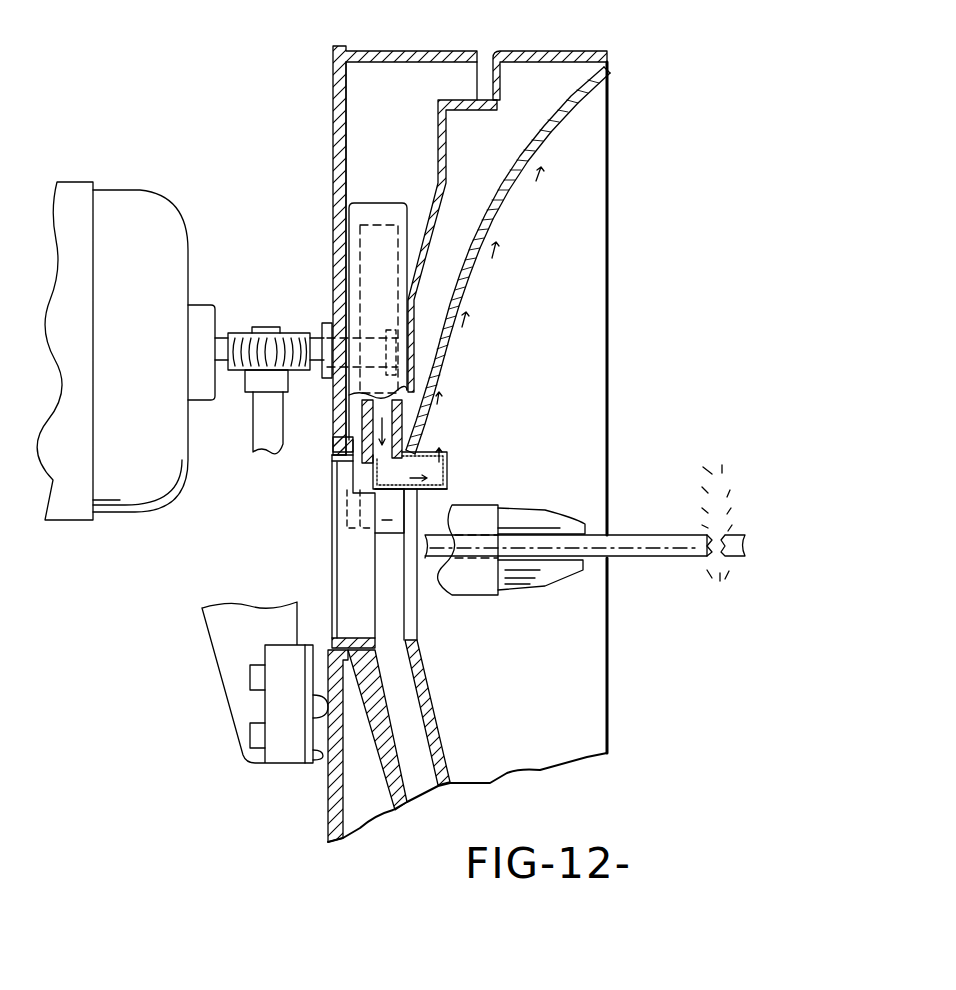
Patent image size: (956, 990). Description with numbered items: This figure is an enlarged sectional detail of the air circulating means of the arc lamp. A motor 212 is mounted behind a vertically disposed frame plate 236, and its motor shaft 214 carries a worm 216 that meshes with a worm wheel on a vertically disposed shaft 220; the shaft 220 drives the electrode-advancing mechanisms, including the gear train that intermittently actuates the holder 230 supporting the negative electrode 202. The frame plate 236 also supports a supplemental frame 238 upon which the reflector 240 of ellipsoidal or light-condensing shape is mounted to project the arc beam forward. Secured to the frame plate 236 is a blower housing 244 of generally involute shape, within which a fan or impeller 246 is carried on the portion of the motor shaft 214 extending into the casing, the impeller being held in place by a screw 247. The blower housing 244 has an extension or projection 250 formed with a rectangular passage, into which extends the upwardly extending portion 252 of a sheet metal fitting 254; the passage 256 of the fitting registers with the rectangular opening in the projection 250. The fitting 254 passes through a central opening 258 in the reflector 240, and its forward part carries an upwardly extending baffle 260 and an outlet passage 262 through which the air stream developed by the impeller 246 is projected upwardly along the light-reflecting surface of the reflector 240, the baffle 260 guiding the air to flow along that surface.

The negative electrode 202 is at (652, 550).
The motor 212 is at (125, 195).
The motor shaft 214 is at (318, 343).
The worm 216 is at (291, 342).
The vertically disposed shaft 220 is at (263, 440).
The electrode holder 230 is at (533, 582).
The frame plate 236 is at (333, 108).
The supplemental frame 238 is at (525, 56).
The reflector 240 is at (542, 148).
The blower housing 244 is at (370, 203).
The fan or impeller 246 is at (365, 243).
The screw 247 is at (397, 351).
The extension or projection 250 is at (365, 433).
The upwardly extending portion 252 is at (375, 477).
The sheet metal fitting 254 is at (440, 490).
The passage 256 is at (382, 460).
The central opening 258 is at (413, 617).
The baffle 260 is at (449, 455).
The outlet passage 262 is at (443, 454).